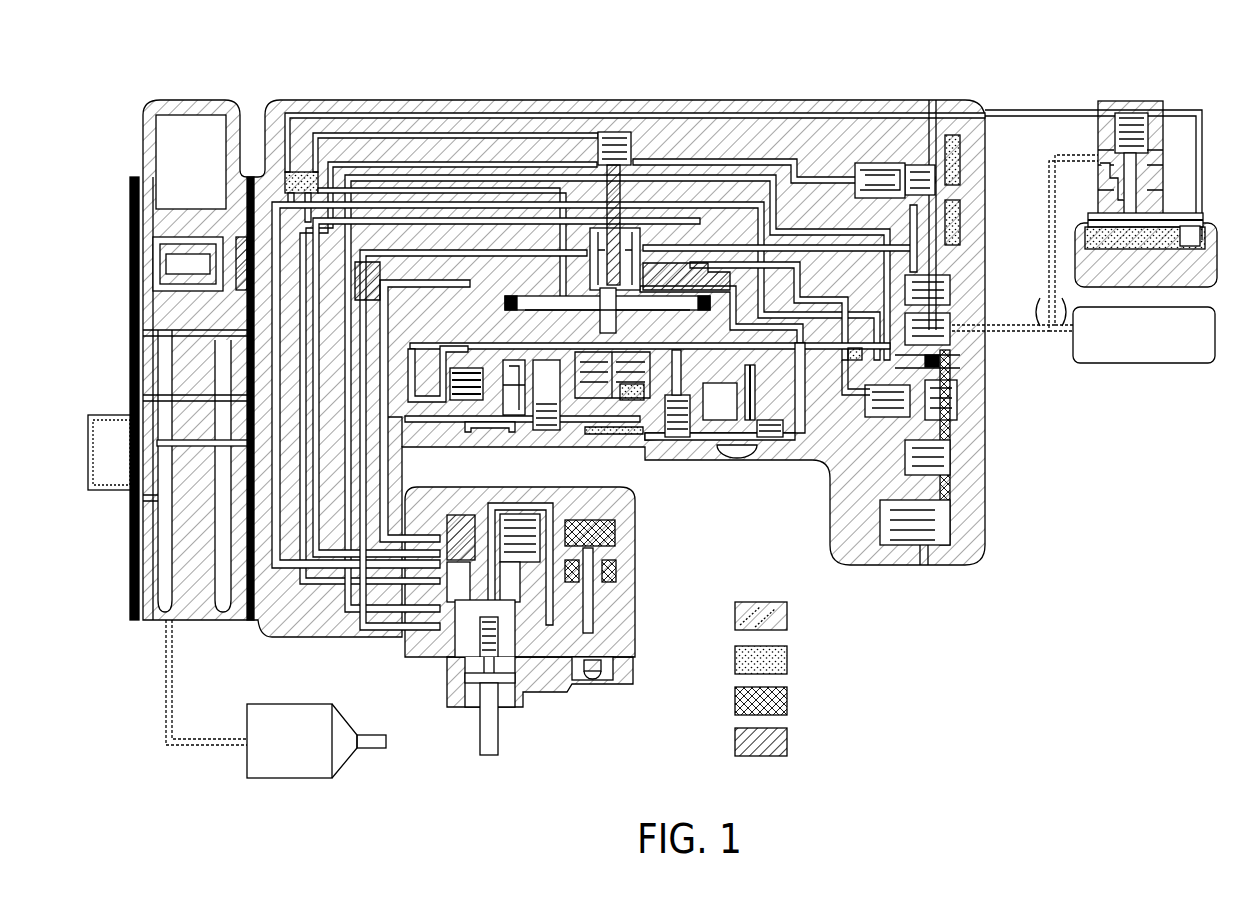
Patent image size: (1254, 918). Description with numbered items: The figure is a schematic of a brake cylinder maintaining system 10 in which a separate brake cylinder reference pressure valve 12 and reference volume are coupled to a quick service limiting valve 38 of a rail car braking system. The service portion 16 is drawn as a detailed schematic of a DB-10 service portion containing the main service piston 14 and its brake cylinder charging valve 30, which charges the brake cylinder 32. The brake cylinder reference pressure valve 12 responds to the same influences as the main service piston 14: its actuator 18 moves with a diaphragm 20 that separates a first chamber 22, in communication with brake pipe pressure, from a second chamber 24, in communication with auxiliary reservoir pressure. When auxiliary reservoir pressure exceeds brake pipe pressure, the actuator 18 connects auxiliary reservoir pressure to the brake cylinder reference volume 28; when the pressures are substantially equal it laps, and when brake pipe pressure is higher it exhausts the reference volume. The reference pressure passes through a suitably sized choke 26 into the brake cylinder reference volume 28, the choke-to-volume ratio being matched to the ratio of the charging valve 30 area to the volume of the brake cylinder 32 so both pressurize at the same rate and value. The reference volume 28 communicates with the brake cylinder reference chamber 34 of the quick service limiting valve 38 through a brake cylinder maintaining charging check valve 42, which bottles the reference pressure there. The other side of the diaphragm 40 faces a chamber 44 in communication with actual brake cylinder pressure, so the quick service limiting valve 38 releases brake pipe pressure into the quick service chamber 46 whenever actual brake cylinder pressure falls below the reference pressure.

The brake cylinder maintaining system 10 is at (612, 80).
The brake cylinder reference pressure valve 12 is at (1143, 100).
The main service piston 14 is at (636, 210).
The service portion 16 is at (456, 100).
The actuator 18 is at (1140, 180).
The diaphragm 20 is at (1195, 250).
The first chamber 22 is at (1188, 220).
The second chamber 24 is at (1123, 248).
The choke 26 is at (1047, 308).
The brake cylinder reference volume 28 is at (1155, 365).
The brake cylinder charging valve 30 is at (620, 224).
The brake cylinder 32 is at (355, 718).
The brake cylinder reference chamber 34 is at (956, 424).
The quick service limiting valve 38 is at (953, 410).
The diaphragm 40 is at (933, 363).
The brake cylinder maintaining charging check valve 42 is at (947, 310).
The chamber 44 is at (870, 404).
The quick service chamber 46 is at (692, 266).